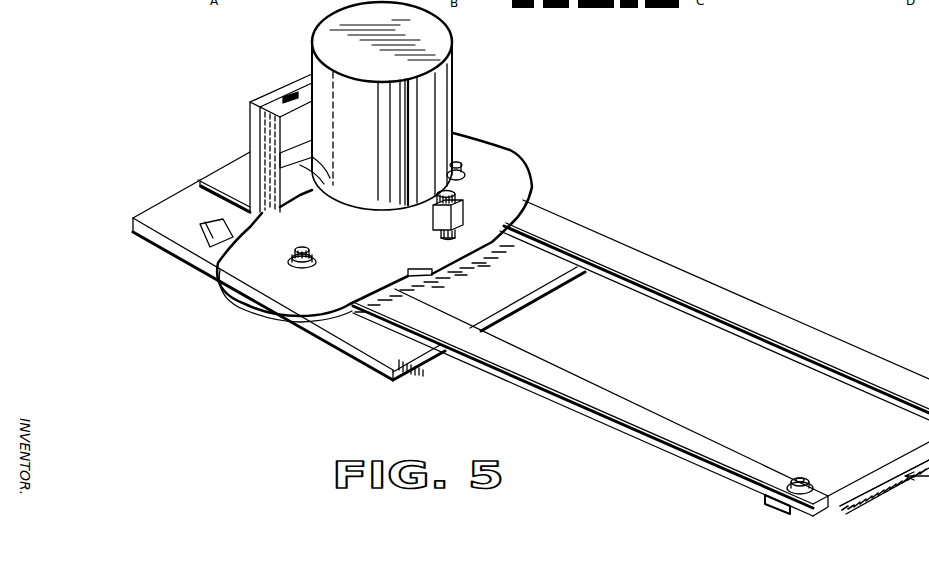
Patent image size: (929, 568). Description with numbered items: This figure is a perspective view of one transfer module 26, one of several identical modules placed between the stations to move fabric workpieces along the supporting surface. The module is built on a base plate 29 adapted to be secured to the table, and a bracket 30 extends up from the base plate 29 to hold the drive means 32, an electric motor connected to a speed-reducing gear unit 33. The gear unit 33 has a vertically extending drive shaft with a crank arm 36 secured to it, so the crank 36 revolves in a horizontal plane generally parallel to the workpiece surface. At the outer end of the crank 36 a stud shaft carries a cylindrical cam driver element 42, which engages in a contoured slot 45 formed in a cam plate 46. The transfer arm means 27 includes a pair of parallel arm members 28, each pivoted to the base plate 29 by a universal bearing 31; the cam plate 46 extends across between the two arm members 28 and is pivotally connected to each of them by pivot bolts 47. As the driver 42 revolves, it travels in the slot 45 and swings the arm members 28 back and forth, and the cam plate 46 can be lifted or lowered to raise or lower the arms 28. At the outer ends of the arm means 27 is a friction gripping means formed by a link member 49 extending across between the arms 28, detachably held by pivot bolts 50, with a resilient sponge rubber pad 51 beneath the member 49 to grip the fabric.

The transfer module 26 is at (563, 106).
The transfer arm means 27 is at (641, 358).
The arm members 28 is at (740, 305).
The base plate 29 is at (155, 208).
The bracket 30 is at (245, 128).
The universal bearing 31 is at (205, 240).
The drive means 32 is at (454, 72).
The speed-reducing gear unit 33 is at (453, 143).
The crank arm 36 is at (464, 211).
The cam driver element 42 is at (433, 234).
The contoured slot 45 is at (432, 207).
The cam plate 46 is at (344, 238).
The pivot bolts 47 is at (297, 255).
The link member 49 is at (887, 431).
The pivot bolts 50 is at (801, 478).
The resilient pad 51 is at (857, 487).